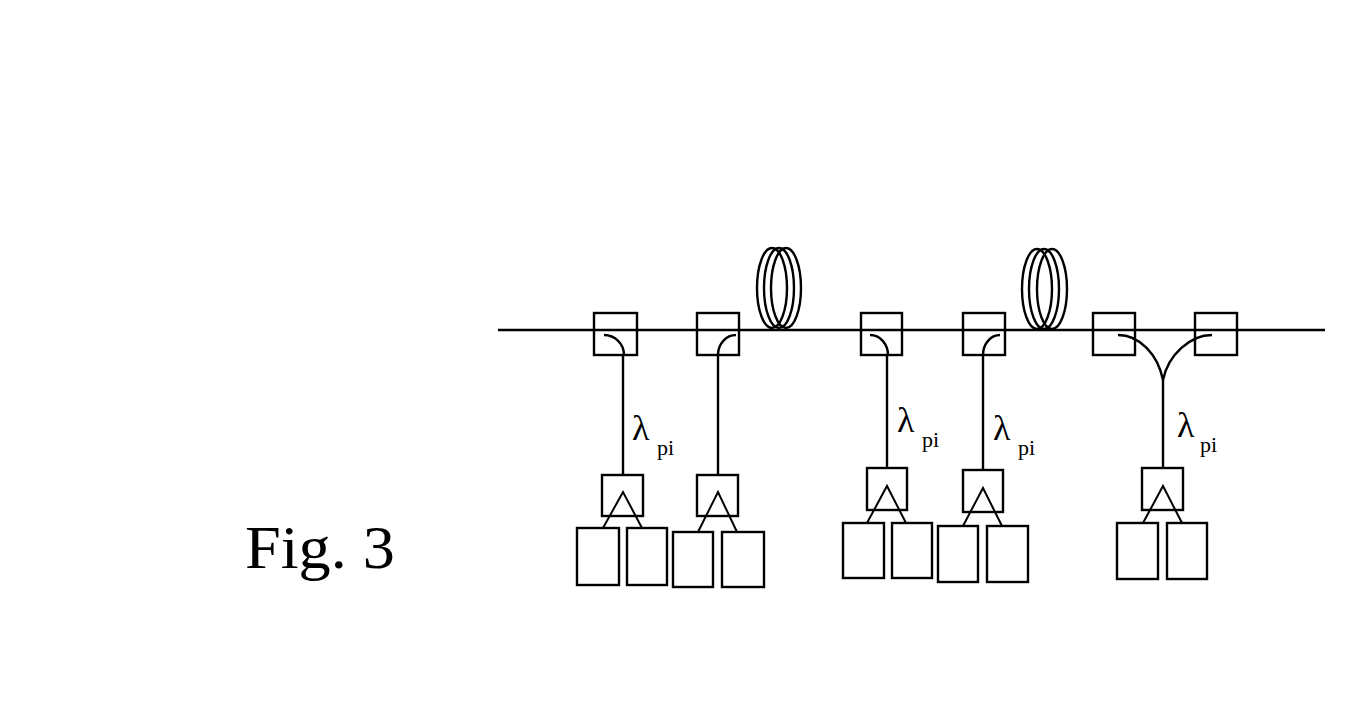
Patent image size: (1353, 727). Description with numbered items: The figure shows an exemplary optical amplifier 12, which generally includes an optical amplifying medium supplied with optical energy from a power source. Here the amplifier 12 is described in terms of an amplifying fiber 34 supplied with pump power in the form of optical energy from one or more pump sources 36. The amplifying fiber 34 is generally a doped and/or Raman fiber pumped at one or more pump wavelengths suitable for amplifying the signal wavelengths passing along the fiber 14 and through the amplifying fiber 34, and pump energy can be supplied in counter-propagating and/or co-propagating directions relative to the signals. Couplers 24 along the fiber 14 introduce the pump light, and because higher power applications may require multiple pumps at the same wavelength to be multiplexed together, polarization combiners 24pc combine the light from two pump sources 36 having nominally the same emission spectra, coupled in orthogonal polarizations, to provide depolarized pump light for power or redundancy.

The optical amplifier 12 is at (1228, 109).
The optical fiber bus 14 is at (1292, 255).
The optical tap coupler 24 is at (722, 313).
The polarization combiner 24pc is at (1142, 488).
The amplifying fiber 34 is at (790, 250).
The pump source 36 is at (892, 610).